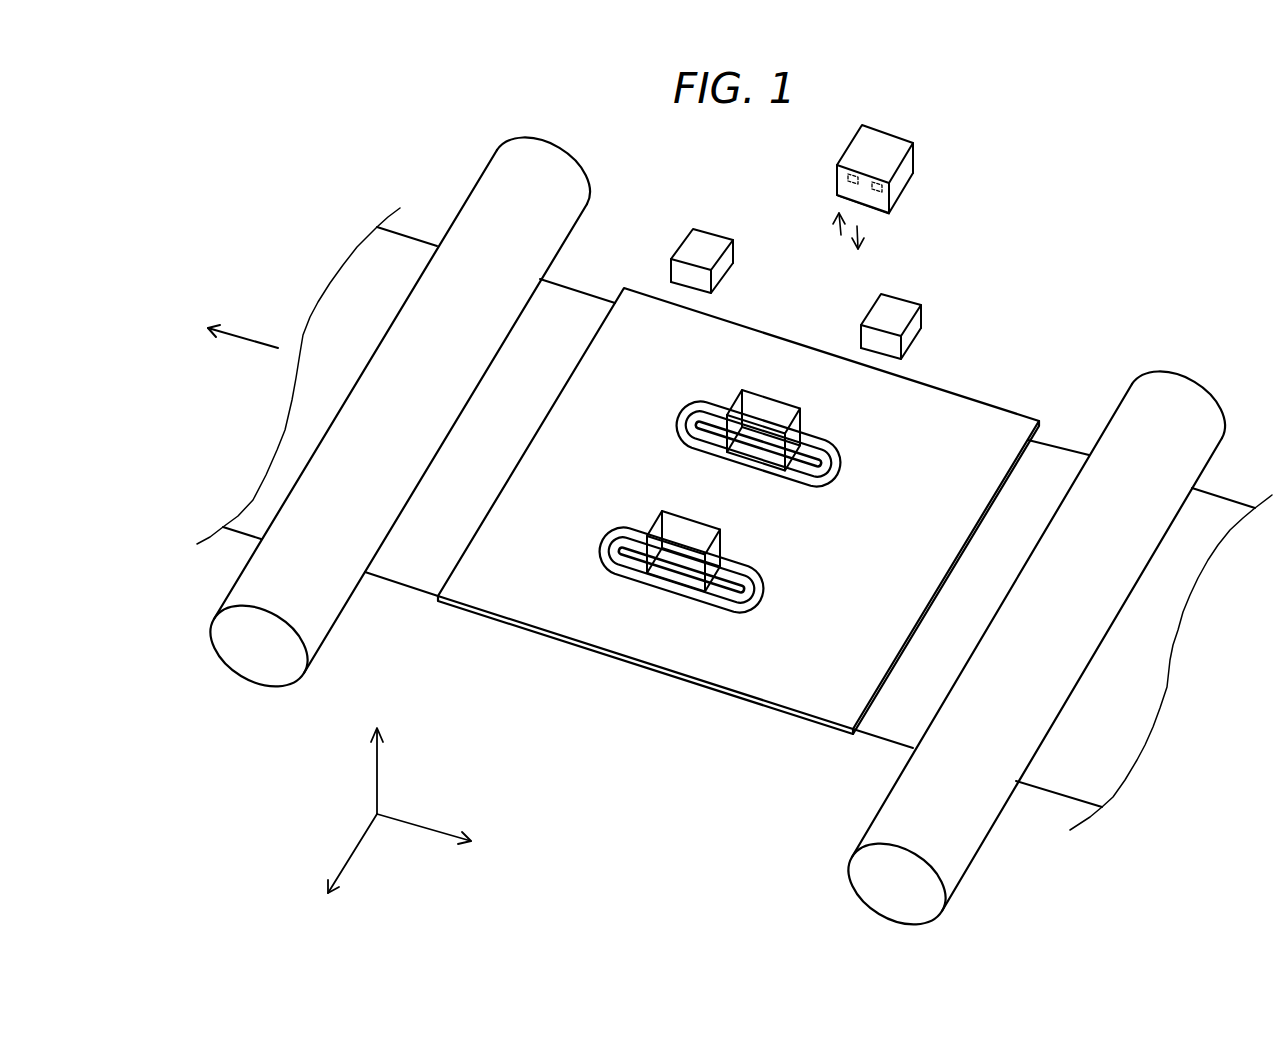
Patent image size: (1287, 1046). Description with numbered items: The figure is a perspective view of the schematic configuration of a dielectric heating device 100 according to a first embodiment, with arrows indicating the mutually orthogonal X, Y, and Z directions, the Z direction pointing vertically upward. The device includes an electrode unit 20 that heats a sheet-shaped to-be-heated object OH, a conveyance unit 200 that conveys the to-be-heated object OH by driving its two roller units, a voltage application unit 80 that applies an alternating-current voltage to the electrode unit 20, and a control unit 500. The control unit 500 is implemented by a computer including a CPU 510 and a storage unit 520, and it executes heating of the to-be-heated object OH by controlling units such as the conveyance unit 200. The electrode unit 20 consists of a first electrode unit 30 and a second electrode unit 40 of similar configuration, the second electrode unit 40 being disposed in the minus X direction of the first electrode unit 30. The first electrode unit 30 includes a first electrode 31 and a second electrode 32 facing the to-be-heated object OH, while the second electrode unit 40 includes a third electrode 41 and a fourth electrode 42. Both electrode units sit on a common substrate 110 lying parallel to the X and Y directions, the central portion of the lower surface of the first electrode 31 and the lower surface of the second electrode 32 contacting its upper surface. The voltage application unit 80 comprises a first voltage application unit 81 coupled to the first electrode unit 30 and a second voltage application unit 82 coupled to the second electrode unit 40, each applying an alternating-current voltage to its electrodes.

The dielectric heating device 100 is at (1120, 212).
The substrate 110 is at (500, 598).
The conveyance unit 200 is at (710, 539).
The to-be-heated object OH is at (1065, 457).
The electrode unit 20 is at (780, 570).
The first electrode unit 30 is at (634, 623).
The first electrode 31 is at (685, 568).
The second electrode 32 is at (615, 568).
The second electrode unit 40 is at (807, 570).
The third electrode 41 is at (891, 427).
The fourth electrode 42 is at (825, 442).
The voltage application unit 80 is at (831, 259).
The first voltage application unit 81 is at (710, 247).
The second voltage application unit 82 is at (912, 342).
The control unit 500 is at (865, 187).
The CPU 510 is at (833, 178).
The storage unit 520 is at (893, 202).